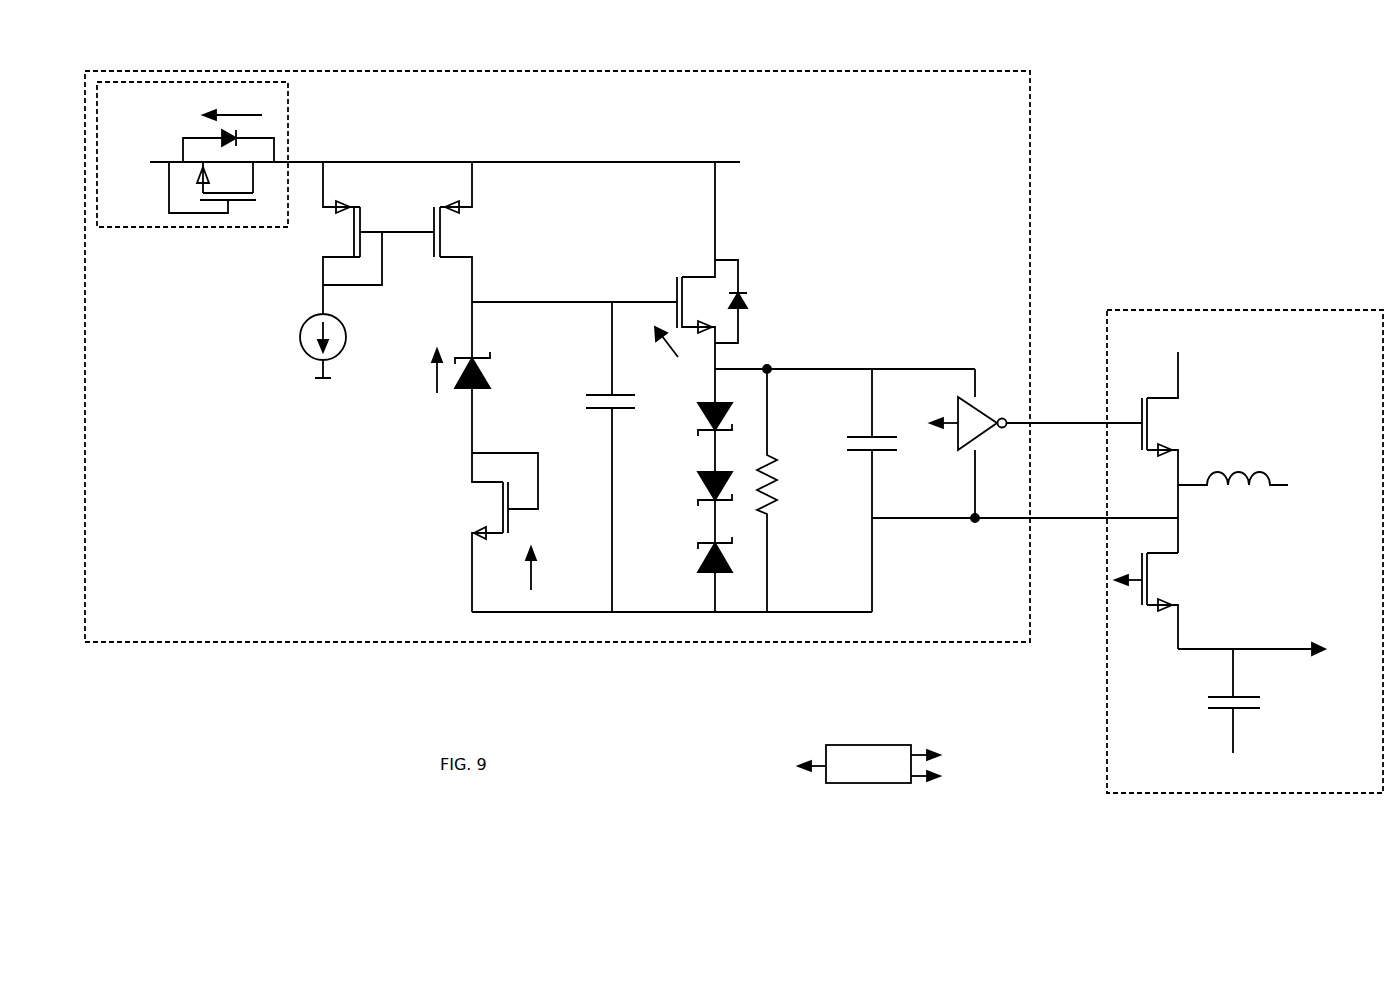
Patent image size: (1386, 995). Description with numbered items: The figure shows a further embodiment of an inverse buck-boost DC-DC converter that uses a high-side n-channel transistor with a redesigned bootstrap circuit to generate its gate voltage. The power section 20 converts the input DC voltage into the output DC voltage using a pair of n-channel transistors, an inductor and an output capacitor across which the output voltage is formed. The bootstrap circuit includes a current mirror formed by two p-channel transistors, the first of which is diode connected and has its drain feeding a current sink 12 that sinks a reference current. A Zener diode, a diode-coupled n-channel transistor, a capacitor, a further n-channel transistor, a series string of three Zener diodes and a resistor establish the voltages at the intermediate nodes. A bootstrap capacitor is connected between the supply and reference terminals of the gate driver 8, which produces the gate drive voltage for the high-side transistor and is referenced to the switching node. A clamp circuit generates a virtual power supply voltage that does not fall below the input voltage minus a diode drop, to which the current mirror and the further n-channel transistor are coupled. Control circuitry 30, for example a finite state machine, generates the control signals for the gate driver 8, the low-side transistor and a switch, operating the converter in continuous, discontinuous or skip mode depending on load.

The current sink 12 is at (297, 318).
The gate driver 8 is at (1036, 443).
The power section 20 is at (1312, 308).
The control circuitry 30 is at (849, 745).